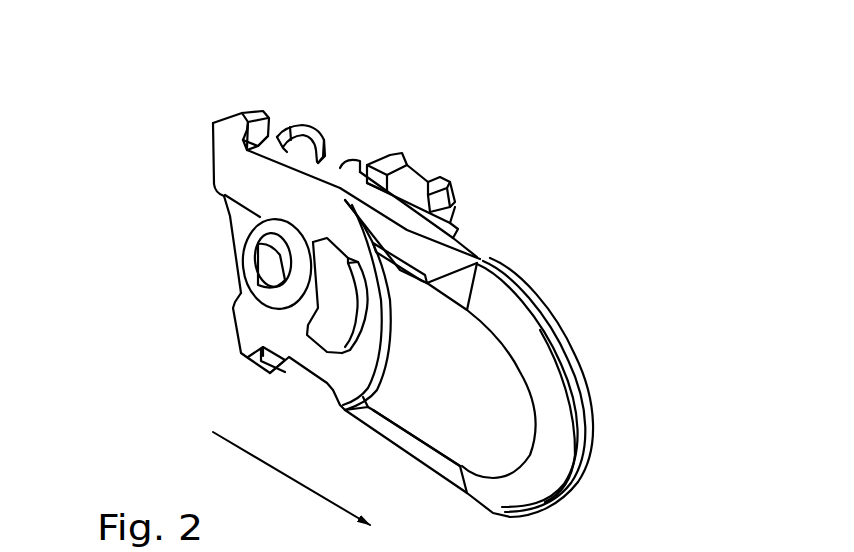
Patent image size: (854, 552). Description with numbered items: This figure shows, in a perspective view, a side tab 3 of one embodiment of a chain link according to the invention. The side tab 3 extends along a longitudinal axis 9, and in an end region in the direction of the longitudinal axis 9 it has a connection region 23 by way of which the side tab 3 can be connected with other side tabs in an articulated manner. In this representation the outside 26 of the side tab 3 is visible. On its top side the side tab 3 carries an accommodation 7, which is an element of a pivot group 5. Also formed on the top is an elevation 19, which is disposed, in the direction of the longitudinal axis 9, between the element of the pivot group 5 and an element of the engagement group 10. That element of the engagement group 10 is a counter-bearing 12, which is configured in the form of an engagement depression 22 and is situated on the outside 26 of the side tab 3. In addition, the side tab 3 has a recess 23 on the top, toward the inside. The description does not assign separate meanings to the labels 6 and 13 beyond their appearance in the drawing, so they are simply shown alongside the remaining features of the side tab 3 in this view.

The side tab 3 is at (147, 86).
The pivot group 5 is at (243, 150).
The rim edge 6 is at (535, 387).
The accommodation 7 is at (243, 150).
The longitudinal axis 9 is at (250, 455).
The engagement group 10 is at (382, 262).
The counter-bearing 12 is at (266, 360).
The guide rail 13 is at (405, 187).
The elevation 19 is at (317, 133).
The engagement depression 22 is at (314, 378).
The connection region 23 is at (241, 102).
The outside 26 is at (447, 352).